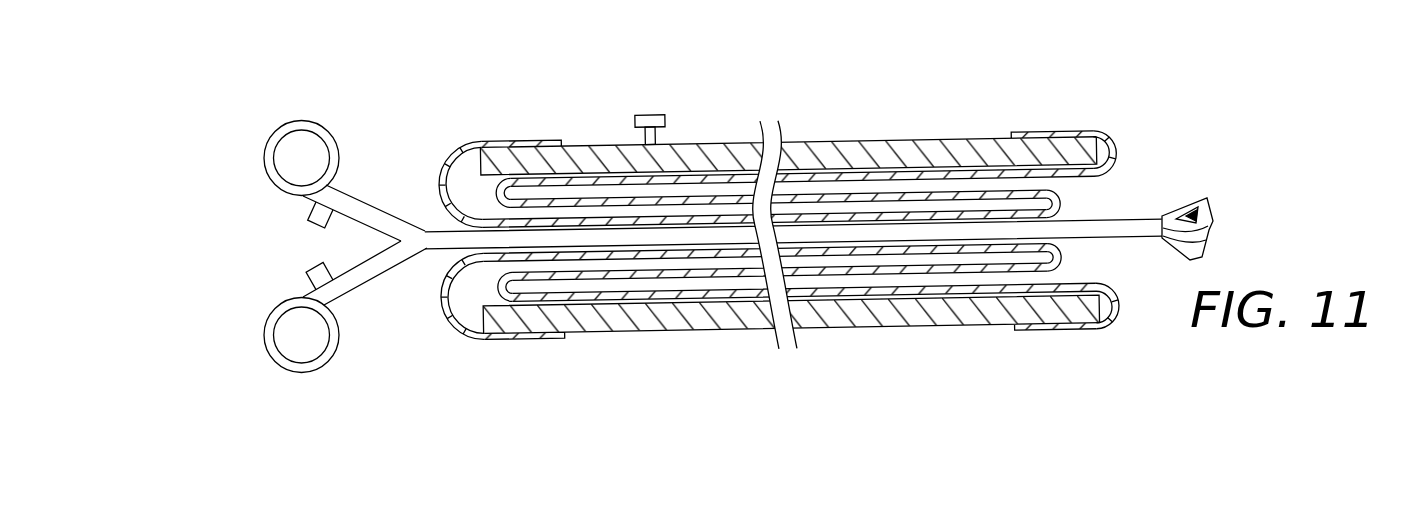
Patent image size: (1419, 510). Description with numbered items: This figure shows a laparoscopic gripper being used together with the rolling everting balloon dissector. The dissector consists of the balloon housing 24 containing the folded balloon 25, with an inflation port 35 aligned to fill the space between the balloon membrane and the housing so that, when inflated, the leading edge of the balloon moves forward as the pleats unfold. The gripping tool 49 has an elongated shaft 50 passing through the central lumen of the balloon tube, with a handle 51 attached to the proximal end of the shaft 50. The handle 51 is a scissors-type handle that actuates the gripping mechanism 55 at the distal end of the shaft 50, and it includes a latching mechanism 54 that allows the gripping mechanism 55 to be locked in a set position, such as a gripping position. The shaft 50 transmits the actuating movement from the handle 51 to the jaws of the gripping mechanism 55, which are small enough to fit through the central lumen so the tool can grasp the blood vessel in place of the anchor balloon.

The balloon housing 24 is at (705, 147).
The balloon 25 is at (1113, 147).
The inflation port 35 is at (652, 118).
The gripping tool 49 is at (332, 284).
The elongated shaft 50 is at (440, 248).
The handle 51 is at (310, 373).
The latching mechanism 54 is at (310, 223).
The gripping mechanism 55 is at (1193, 199).